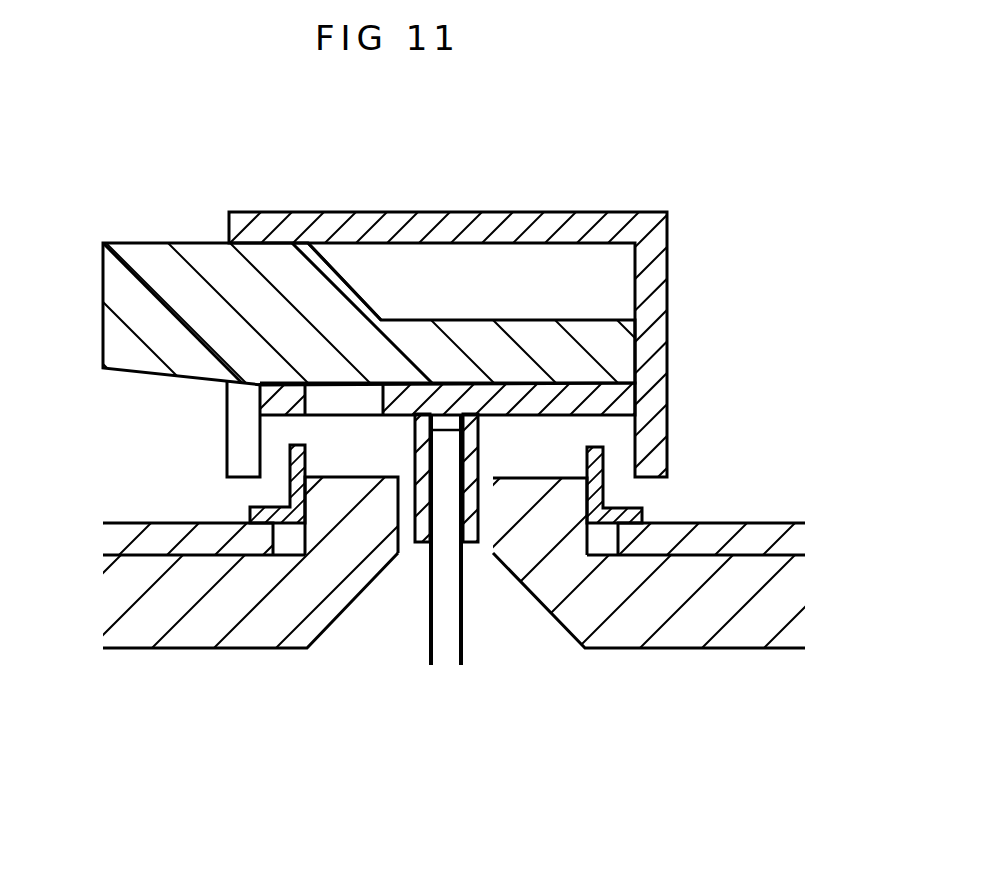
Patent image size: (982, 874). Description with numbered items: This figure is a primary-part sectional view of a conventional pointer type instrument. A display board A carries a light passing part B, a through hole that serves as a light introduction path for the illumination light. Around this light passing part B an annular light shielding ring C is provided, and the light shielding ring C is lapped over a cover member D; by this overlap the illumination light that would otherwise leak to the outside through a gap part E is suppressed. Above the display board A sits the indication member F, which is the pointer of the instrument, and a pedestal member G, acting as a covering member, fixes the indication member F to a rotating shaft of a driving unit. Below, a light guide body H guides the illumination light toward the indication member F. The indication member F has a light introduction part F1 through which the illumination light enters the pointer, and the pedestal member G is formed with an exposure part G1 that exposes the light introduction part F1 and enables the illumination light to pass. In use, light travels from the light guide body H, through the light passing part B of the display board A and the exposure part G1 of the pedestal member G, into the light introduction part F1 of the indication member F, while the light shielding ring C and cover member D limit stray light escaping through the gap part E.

The display board A is at (152, 540).
The light passing part B is at (292, 542).
The light shielding ring C is at (292, 456).
The cover member D is at (660, 267).
The gap part E is at (452, 443).
The indication member F is at (163, 252).
The light introduction part F1 is at (342, 387).
The pedestal member G is at (537, 397).
The exposure part G1 is at (342, 400).
The light guide body H is at (190, 642).